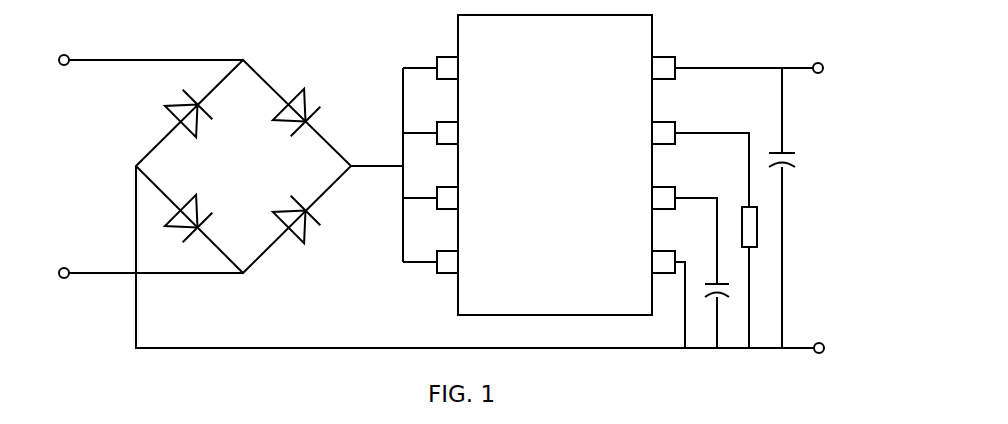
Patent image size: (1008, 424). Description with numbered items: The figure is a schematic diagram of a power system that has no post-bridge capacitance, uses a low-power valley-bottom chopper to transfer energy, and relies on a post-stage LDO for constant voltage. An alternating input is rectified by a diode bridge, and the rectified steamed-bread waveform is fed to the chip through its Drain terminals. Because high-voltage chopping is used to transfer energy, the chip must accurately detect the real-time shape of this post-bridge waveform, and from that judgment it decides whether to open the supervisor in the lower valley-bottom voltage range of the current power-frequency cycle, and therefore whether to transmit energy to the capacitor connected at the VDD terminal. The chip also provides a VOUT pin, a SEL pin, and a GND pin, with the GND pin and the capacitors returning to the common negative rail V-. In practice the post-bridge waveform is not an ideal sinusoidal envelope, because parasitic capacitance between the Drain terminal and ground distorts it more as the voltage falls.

The Drain terminal Drain is at (458, 165).
The output voltage pin VOUT is at (705, 68).
The select pin with programming resistor SEL is at (681, 235).
The VDD terminal VDD is at (666, 267).
The ground pin GND is at (644, 299).
The negative output terminal / ground bus V- is at (495, 262).